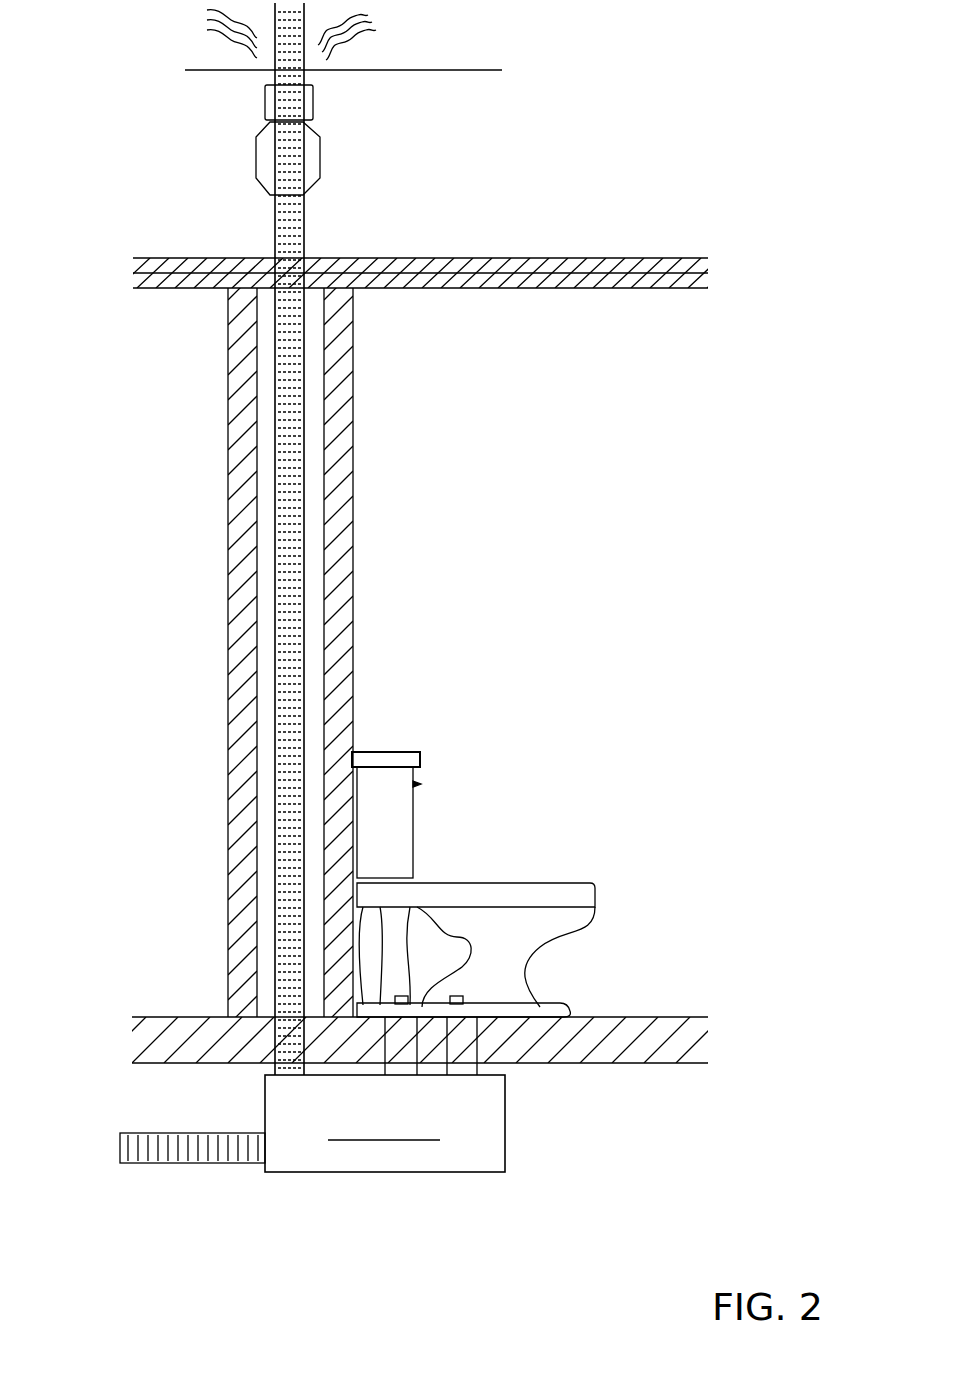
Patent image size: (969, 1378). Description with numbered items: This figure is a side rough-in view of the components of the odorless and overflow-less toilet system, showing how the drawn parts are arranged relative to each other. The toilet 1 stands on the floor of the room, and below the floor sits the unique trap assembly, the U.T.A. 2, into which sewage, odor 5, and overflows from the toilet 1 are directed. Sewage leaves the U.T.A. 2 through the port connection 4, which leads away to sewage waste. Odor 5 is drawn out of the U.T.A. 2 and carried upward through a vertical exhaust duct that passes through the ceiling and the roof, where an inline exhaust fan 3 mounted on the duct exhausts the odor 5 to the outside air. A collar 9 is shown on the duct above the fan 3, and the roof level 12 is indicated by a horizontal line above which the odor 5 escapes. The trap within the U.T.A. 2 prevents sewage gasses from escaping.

The toilet 1 is at (518, 862).
The unique trap assembly (U.T.A.) 2 is at (405, 1172).
The inline exhaust fan 3 is at (335, 172).
The port connection 4 is at (108, 1147).
The odor 5 is at (378, 27).
The collar 9 is at (323, 100).
The roof level 12 is at (517, 70).